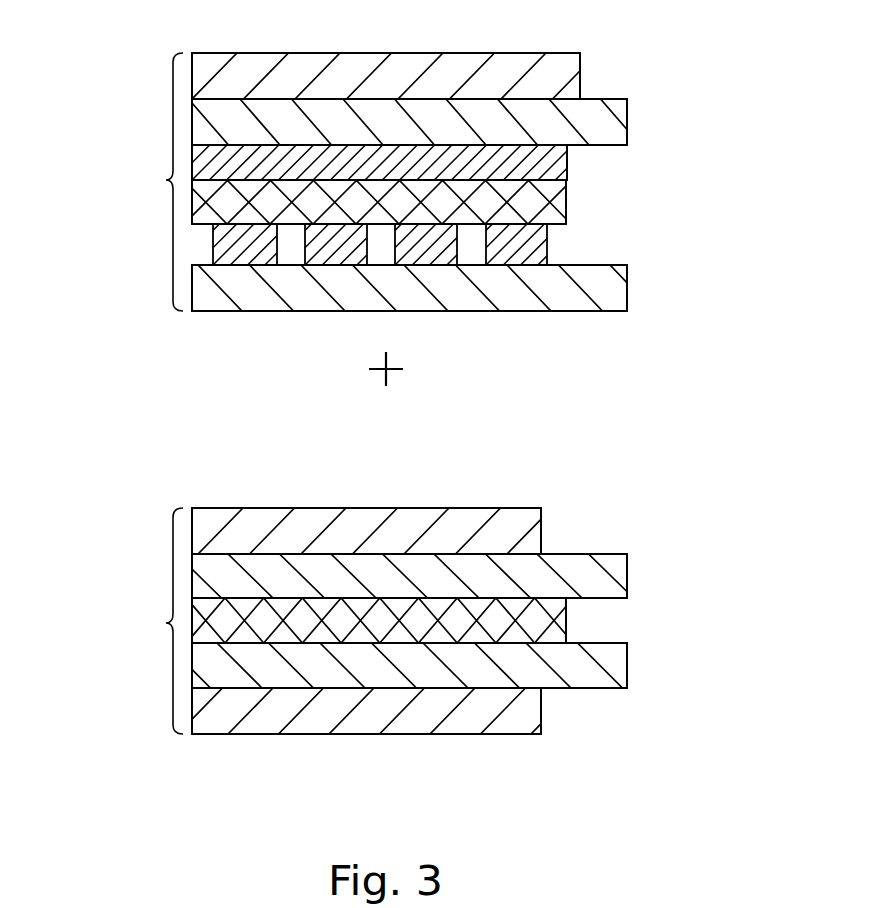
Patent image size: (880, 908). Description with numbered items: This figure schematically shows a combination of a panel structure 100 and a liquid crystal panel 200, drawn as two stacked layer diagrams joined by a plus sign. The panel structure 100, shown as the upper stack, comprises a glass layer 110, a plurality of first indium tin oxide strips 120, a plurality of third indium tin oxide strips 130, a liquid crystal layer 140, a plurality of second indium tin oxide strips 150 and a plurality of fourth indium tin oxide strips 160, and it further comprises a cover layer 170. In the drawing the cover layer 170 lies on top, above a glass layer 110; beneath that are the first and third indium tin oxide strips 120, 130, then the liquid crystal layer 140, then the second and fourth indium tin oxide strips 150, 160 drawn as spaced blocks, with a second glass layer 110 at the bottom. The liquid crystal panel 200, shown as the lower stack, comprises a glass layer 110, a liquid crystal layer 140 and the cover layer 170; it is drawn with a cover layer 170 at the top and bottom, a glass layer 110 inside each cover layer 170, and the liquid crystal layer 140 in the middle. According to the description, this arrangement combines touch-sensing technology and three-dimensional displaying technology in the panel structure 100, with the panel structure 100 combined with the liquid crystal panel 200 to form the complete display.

The panel structure 100 is at (76, 38).
The liquid crystal panel 200 is at (88, 488).
The glass layer 110 is at (632, 121).
The first indium tin oxide strips 120 is at (474, 162).
The third indium tin oxide strips 130 is at (727, 158).
The liquid crystal layer 140 is at (572, 202).
The second indium tin oxide strips 150 is at (484, 244).
The fourth indium tin oxide strips 160 is at (727, 243).
The cover layer 170 is at (585, 75).